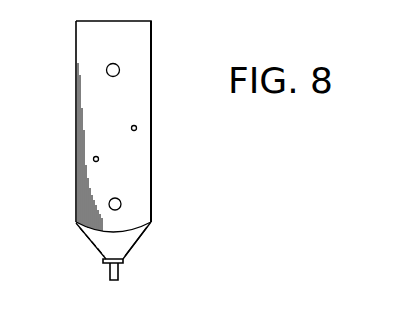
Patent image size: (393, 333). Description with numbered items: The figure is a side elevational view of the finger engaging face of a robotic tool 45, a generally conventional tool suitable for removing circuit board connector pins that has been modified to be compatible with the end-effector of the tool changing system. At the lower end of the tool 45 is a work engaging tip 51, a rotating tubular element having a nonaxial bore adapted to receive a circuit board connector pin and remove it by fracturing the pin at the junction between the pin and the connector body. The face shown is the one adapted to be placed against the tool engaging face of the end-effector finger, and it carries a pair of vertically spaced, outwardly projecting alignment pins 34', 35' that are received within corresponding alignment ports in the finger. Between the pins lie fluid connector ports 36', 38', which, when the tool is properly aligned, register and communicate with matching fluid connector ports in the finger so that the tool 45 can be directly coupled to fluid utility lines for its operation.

The robotic tool 45 is at (70, 154).
The alignment pin 34' is at (153, 63).
The fluid connector port 36' is at (168, 118).
The fluid connector port 38' is at (148, 149).
The alignment pin 35' is at (156, 200).
The work engaging tip 51 is at (119, 269).